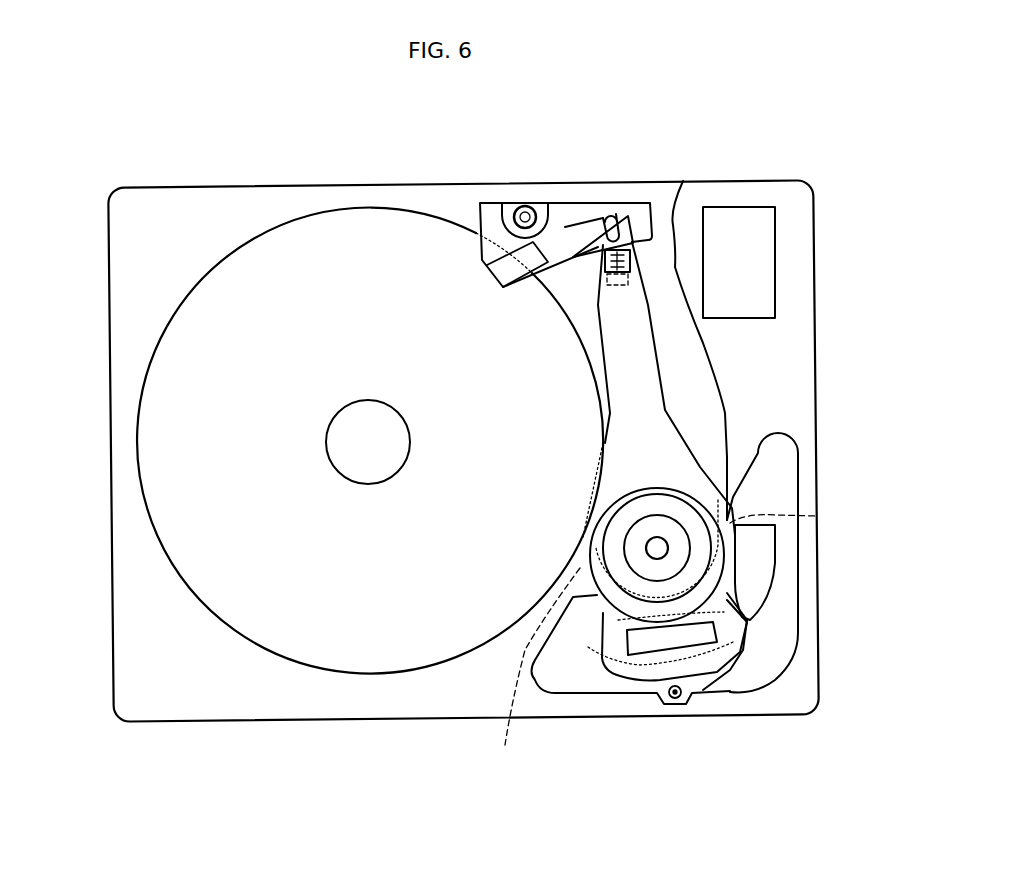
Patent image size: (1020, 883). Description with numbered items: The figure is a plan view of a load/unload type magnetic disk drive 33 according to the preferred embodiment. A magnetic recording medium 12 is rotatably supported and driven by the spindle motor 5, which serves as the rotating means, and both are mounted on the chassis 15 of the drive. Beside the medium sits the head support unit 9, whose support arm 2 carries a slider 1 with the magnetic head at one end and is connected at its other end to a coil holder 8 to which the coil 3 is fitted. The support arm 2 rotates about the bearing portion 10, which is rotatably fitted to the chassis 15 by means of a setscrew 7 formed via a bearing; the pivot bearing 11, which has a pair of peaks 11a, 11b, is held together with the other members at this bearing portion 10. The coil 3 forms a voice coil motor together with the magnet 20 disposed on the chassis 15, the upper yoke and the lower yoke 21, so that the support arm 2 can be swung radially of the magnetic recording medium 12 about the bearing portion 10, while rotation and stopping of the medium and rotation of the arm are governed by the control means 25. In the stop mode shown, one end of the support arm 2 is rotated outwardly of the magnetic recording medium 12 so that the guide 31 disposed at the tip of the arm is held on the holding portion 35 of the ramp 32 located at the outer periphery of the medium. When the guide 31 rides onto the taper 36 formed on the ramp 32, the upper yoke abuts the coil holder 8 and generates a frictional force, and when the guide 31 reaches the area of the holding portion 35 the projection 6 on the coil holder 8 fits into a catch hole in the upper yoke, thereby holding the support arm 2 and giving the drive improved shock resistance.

The slider 1 is at (640, 257).
The support arm 2 is at (640, 318).
The coil 3 is at (735, 655).
The spindle motor 5 is at (372, 414).
The projection 6 is at (676, 700).
The setscrew 7 is at (657, 548).
The coil holder 8 is at (618, 690).
The head support unit 9 is at (617, 482).
The bearing portion 10 is at (575, 688).
The pivot bearing 11 is at (745, 528).
The peak 11a is at (505, 745).
The peak 11b is at (818, 516).
The magnetic recording medium 12 is at (172, 470).
The chassis 15 is at (152, 720).
The magnet 20 is at (758, 563).
The lower yoke 21 is at (782, 463).
The control means 25 is at (752, 246).
The guide 31 is at (608, 214).
The ramp 32 is at (565, 212).
The magnetic disk drive 33 is at (290, 794).
The holding portion 35 is at (622, 214).
The taper 36 is at (503, 263).